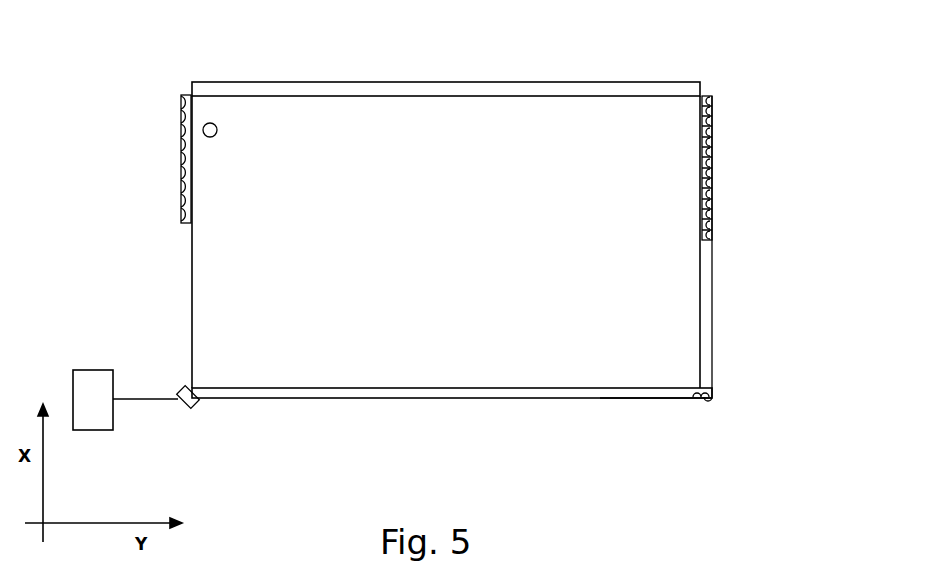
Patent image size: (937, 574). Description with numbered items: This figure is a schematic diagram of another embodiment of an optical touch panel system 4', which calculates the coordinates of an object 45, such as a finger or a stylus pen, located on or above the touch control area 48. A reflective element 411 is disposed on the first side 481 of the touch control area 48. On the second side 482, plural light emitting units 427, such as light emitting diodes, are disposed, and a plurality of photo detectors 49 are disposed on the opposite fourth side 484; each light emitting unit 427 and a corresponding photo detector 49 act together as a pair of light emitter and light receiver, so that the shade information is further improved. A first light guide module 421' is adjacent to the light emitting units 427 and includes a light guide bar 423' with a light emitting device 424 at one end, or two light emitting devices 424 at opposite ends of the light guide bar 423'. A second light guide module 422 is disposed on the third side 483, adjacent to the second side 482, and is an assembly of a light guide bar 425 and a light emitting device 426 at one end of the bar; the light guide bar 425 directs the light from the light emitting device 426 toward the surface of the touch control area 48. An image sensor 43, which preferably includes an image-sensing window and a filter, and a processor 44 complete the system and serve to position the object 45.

The optical touch panel system 4' is at (777, 27).
The reflective element 411 is at (467, 90).
The image sensor 43 is at (186, 408).
The processor 44 is at (95, 370).
The object 45 is at (203, 133).
The touch control area 48 is at (444, 368).
The first side 481 is at (360, 96).
The second side 482 is at (705, 245).
The third side 483 is at (337, 389).
The fourth side 484 is at (191, 275).
The photo detectors 49 is at (183, 184).
The light emitting units 427 is at (712, 188).
The first light guide module 421' is at (743, 332).
The light guide bar 423' is at (763, 319).
The light emitting device 424 is at (710, 397).
The second light guide module 422 is at (722, 505).
The light guide bar 425 is at (642, 393).
The light emitting device 426 is at (697, 393).